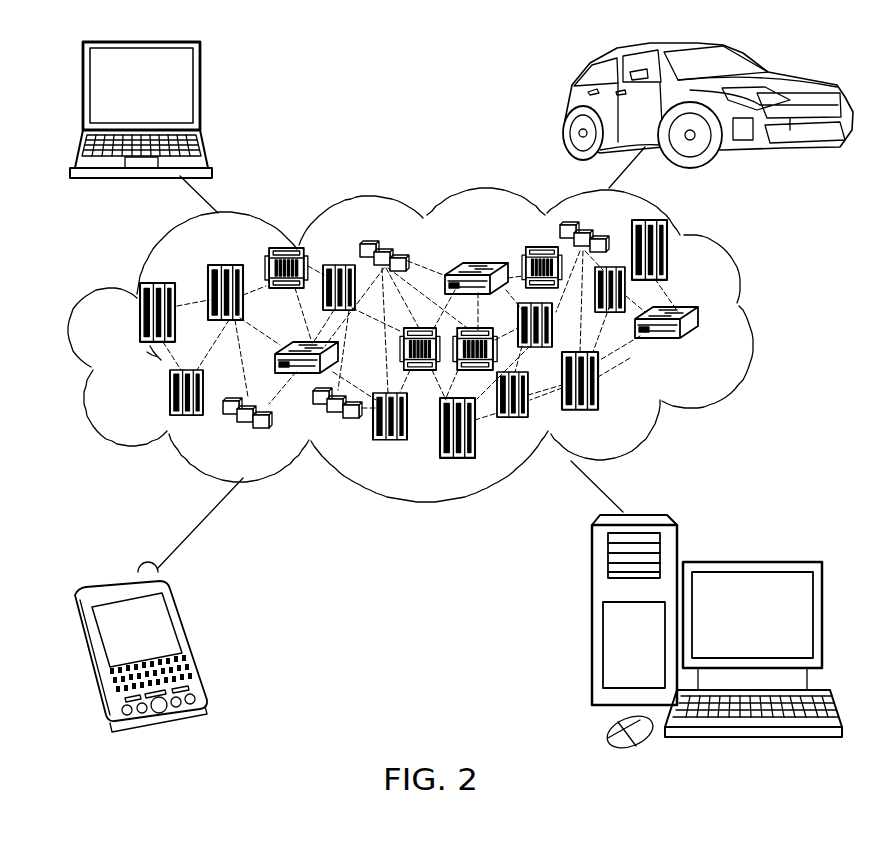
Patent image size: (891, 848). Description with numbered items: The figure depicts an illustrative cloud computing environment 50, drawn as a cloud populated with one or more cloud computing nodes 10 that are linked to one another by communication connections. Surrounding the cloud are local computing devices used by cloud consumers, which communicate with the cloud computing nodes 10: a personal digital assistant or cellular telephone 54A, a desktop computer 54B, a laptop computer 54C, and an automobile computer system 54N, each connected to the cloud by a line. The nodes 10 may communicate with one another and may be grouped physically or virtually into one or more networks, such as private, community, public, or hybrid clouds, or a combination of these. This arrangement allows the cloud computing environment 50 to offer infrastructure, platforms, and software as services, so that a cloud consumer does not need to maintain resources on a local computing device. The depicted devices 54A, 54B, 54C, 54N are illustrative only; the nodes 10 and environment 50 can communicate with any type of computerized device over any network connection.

The cloud computing node 10 is at (701, 345).
The cloud computing environment 50 is at (750, 322).
The personal digital assistant (PDA) or cellular telephone 54A is at (195, 640).
The desktop computer 54B is at (750, 562).
The laptop computer 54C is at (200, 90).
The automobile computer system 54N is at (565, 105).